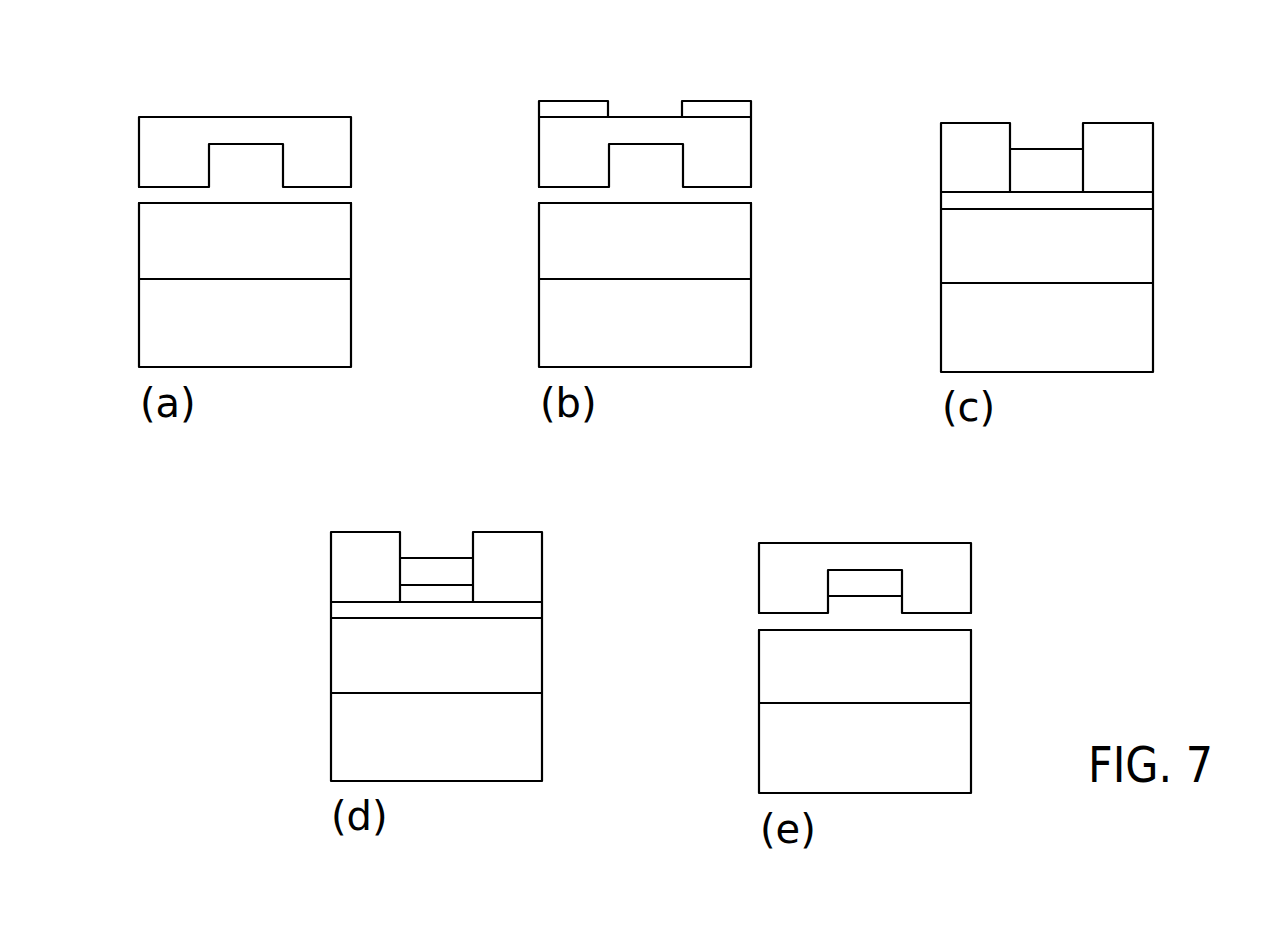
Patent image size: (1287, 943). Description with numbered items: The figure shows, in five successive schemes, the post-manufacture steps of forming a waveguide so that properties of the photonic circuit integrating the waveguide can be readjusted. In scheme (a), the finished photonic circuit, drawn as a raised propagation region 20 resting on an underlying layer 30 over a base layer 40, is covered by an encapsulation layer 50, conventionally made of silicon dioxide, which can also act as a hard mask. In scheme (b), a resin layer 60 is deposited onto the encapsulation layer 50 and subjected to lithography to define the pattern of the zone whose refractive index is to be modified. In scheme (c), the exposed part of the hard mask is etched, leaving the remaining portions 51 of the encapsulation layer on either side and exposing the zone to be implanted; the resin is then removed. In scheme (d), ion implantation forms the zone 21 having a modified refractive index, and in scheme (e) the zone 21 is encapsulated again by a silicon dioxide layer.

The semiconductor layer 20 is at (253, 158).
The zone having a modified refractive index 21 is at (437, 577).
The insulating layer 30 is at (313, 262).
The substrate 40 is at (260, 335).
The encapsulation layer 50 is at (172, 142).
The resist pattern 51 is at (973, 145).
The resin layer 60 is at (598, 107).